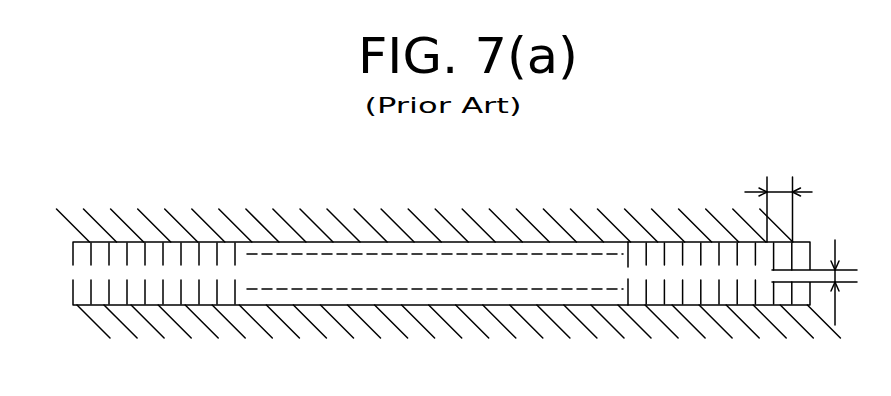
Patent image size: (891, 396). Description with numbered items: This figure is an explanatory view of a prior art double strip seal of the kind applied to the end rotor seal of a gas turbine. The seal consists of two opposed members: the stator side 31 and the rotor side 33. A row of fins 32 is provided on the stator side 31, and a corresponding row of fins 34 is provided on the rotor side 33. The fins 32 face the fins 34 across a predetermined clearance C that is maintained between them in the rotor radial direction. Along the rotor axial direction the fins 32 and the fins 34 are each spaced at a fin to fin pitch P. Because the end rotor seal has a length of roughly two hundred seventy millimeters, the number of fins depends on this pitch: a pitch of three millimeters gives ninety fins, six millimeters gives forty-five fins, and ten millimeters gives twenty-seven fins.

The stator side 31 is at (313, 241).
The fins 32 is at (629, 253).
The rotor side 33 is at (322, 305).
The fins 34 is at (633, 292).
The fin to fin pitch P is at (778, 192).
The clearance C is at (843, 269).